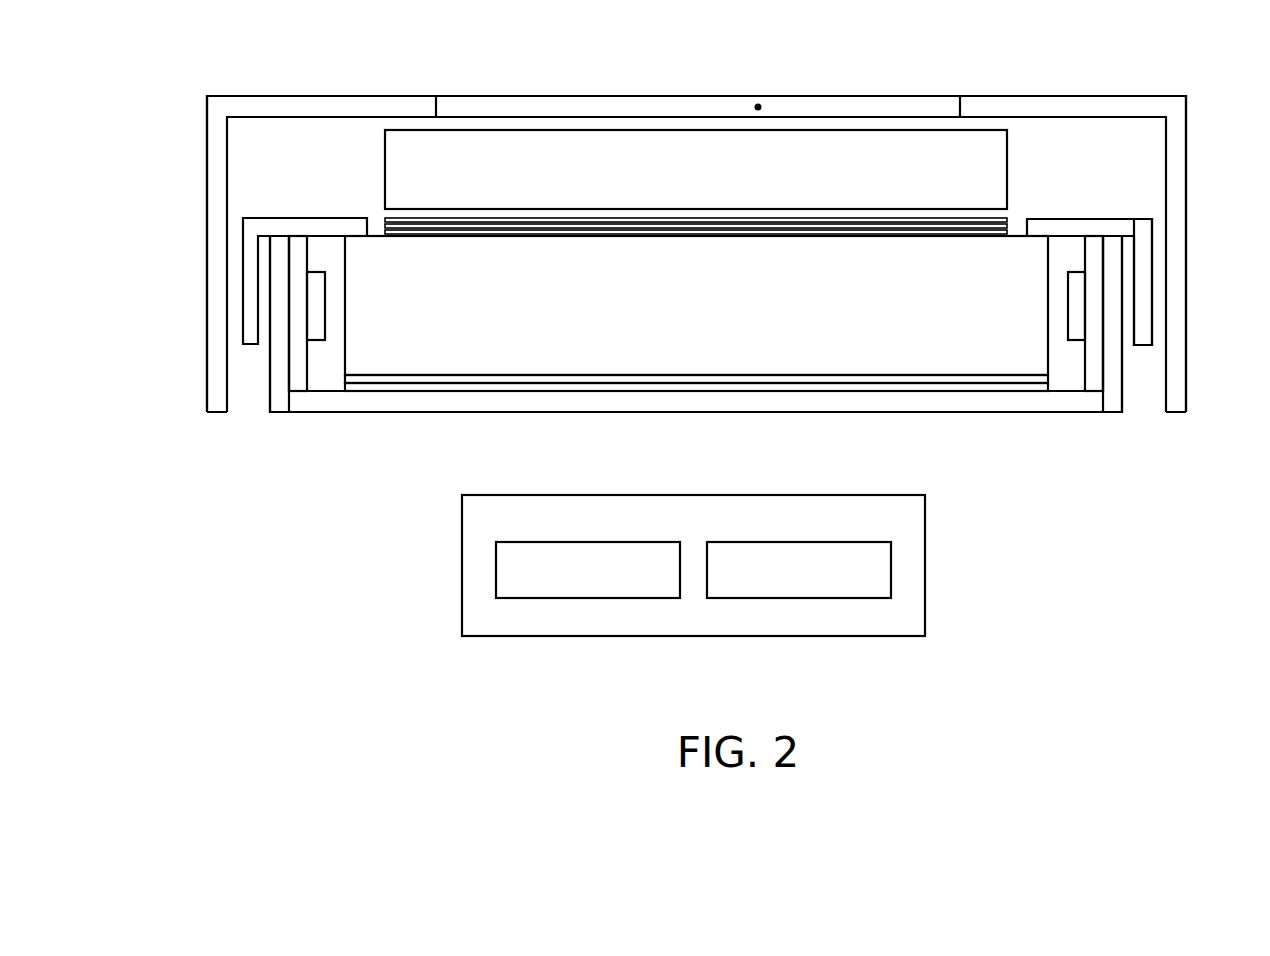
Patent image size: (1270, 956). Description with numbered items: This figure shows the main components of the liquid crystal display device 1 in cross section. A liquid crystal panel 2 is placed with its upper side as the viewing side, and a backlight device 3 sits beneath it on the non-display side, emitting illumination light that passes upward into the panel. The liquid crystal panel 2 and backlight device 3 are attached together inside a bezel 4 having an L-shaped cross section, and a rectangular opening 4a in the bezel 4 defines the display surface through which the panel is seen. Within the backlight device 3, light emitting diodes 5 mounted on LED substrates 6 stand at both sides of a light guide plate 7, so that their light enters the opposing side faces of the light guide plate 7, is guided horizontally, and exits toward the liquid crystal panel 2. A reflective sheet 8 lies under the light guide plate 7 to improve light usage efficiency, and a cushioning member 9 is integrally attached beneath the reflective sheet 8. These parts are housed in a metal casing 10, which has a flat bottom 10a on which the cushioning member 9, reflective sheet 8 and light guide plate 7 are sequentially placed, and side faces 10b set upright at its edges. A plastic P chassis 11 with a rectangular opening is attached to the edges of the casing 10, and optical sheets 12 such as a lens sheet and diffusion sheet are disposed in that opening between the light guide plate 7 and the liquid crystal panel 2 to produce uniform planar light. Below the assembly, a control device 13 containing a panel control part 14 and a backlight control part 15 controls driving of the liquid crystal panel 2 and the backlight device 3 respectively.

The liquid crystal display device 1 is at (891, 59).
The liquid crystal panel 2 is at (1007, 164).
The backlight device 3 is at (1068, 219).
The bezel 4 is at (1112, 97).
The opening 4a is at (758, 103).
The light emitting diodes 5 is at (318, 330).
The LED substrates 6 is at (298, 383).
The light guide plate 7 is at (672, 328).
The reflective sheet 8 is at (561, 379).
The cushioning member 9 is at (609, 389).
The casing 10 is at (1112, 414).
The bottom 10a is at (806, 402).
The side faces 10b is at (277, 307).
The P chassis 11 is at (1144, 255).
The optical sheets 12 is at (580, 232).
The control device 13 is at (925, 565).
The panel control part 14 is at (640, 541).
The backlight control part 15 is at (852, 541).